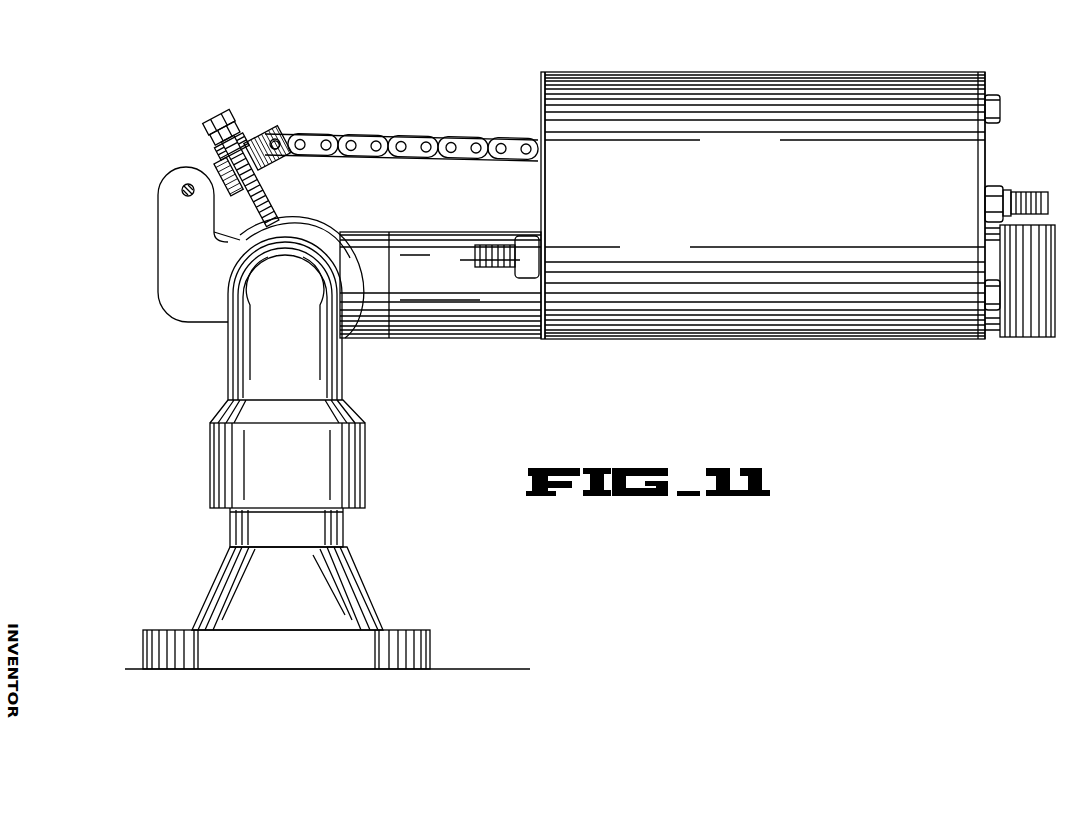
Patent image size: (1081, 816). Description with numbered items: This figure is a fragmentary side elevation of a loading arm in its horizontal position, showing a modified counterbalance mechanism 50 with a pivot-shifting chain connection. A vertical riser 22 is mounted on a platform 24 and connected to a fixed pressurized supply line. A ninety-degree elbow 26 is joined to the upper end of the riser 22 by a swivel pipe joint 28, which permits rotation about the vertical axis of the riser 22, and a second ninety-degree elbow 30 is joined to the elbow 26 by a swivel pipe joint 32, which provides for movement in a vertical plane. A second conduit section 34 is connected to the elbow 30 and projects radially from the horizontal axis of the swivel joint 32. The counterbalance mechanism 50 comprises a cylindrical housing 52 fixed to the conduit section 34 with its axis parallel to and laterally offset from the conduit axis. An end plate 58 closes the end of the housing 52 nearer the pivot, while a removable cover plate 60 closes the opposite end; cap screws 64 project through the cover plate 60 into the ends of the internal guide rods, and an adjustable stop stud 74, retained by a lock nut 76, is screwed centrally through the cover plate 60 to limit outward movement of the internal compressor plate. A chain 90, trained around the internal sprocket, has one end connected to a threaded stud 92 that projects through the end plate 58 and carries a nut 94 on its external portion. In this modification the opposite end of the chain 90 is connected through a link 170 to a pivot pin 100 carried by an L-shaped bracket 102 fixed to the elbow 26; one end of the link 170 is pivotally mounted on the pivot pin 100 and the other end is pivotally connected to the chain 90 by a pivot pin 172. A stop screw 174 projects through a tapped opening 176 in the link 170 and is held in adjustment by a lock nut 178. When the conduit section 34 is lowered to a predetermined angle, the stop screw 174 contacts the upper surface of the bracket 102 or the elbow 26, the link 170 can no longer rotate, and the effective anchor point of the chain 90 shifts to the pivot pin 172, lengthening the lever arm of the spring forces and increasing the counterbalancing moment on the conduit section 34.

The riser 22 is at (270, 586).
The platform 24 is at (487, 669).
The 90° elbow 26 is at (292, 328).
The swivel pipe joint 28 is at (252, 474).
The second 90° elbow 30 is at (440, 293).
The swivel pipe joint 32 is at (318, 236).
The second conduit section 34 is at (472, 322).
The counterbalance mechanism 50 is at (763, 178).
The cylindrical housing 52 is at (806, 203).
The end plate 58 is at (548, 185).
The removable cover plate 60 is at (985, 215).
The cap screws 64 is at (996, 98).
The adjustable stop stud 74 is at (1025, 198).
The lock nut 76 is at (1008, 195).
The chain 90 is at (418, 148).
The threaded stud 92 is at (476, 256).
The nut 94 is at (530, 252).
The pivot pin 100 is at (182, 190).
The L-shaped bracket 102 is at (165, 244).
The link 170 is at (293, 128).
The pivot pin 172 is at (280, 142).
The stop screw 174 is at (271, 154).
The tapped opening 176 is at (260, 184).
The lock nut 178 is at (240, 125).